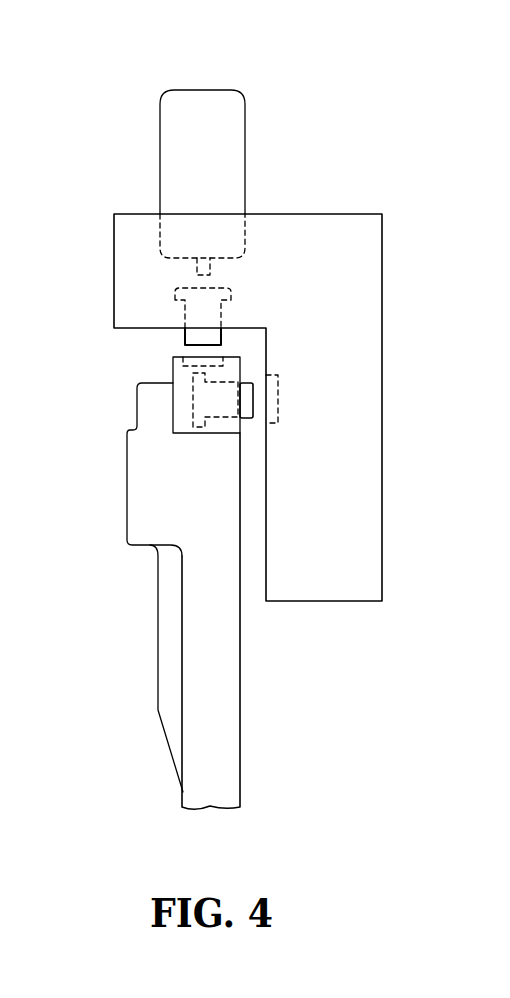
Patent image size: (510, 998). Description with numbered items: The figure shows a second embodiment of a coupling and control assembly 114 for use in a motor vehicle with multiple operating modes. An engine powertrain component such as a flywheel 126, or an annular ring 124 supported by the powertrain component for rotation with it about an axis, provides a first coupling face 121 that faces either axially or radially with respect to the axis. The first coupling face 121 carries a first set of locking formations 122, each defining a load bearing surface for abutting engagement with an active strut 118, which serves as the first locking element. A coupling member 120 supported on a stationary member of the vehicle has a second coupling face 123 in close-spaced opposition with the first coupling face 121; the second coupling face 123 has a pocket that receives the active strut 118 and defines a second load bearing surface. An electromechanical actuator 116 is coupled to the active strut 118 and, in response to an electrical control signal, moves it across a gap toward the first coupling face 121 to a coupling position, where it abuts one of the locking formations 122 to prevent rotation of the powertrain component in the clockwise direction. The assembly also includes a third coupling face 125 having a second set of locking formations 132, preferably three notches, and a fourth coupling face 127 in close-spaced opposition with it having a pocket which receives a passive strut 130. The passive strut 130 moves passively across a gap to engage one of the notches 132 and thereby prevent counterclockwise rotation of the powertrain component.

The coupling and control assembly 114 is at (302, 62).
The electromechanical actuator 116 is at (245, 178).
The active strut 118 is at (222, 312).
The coupling member 120 is at (320, 602).
The first coupling face 121 is at (241, 690).
The first set of locking formations 122 is at (188, 355).
The second coupling face 123 is at (266, 468).
The annular ring 124 is at (173, 412).
The third coupling face 125 is at (153, 383).
The flywheel 126 is at (243, 767).
The fourth coupling face 127 is at (130, 330).
The passive strut 130 is at (216, 424).
The second set of locking formations 132 is at (280, 398).